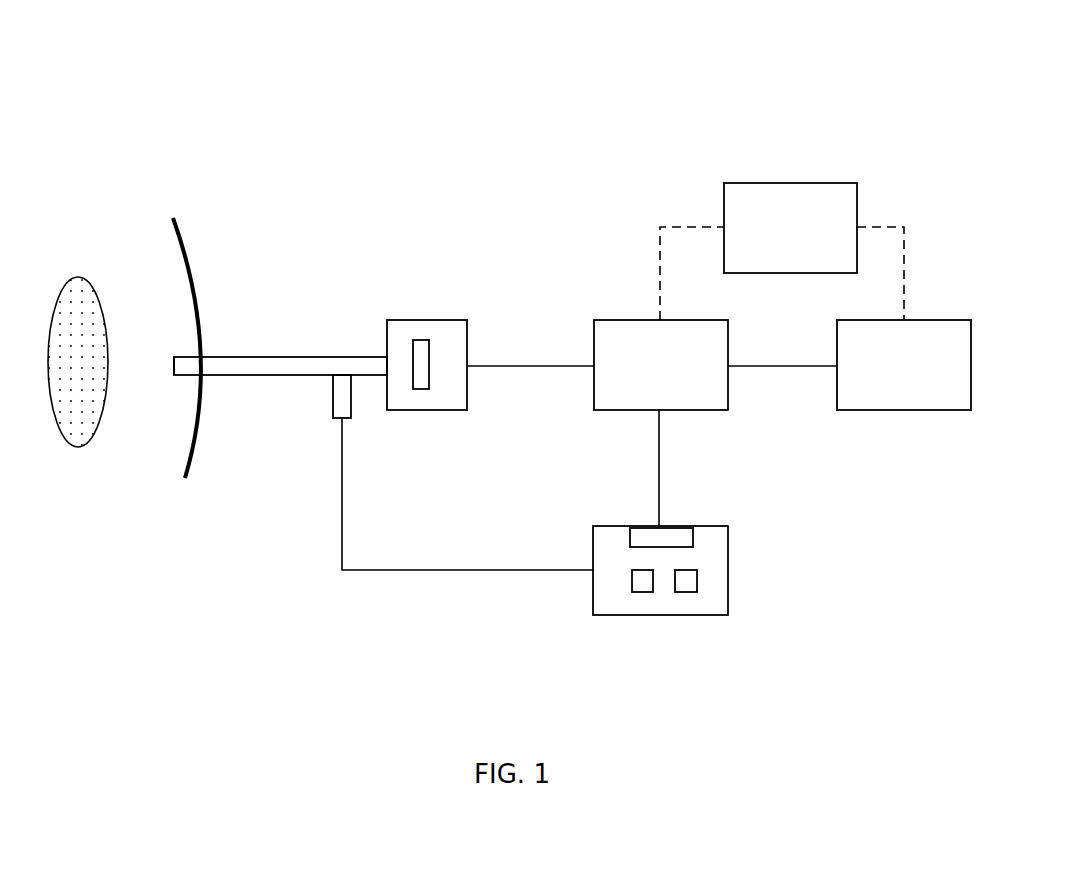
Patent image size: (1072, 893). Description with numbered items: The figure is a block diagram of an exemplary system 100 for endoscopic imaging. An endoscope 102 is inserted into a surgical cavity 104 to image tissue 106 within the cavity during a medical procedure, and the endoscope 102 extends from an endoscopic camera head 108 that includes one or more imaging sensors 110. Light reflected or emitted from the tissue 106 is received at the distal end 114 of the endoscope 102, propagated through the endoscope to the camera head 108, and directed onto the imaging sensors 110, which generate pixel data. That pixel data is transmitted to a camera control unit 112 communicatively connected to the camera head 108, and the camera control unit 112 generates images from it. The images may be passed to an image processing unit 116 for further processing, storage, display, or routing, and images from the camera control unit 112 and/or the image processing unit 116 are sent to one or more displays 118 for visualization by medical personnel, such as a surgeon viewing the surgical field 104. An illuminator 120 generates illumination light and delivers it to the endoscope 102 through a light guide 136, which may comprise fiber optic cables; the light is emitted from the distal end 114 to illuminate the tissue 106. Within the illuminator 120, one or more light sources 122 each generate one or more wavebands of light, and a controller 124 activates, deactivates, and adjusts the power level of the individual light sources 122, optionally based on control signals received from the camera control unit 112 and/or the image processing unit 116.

The system 100 is at (967, 93).
The endoscope 102 is at (314, 355).
The surgical cavity 104 is at (175, 317).
The tissue 106 is at (70, 310).
The endoscopic camera head 108 is at (415, 320).
The imaging sensors 110 is at (429, 357).
The camera control unit 112 is at (661, 365).
The distal end 114 is at (173, 364).
The image processing unit 116 is at (904, 365).
The displays 118 is at (790, 228).
The illuminator 120 is at (727, 553).
The light sources 122 is at (641, 593).
The controller 124 is at (668, 528).
The light guide 136 is at (448, 570).